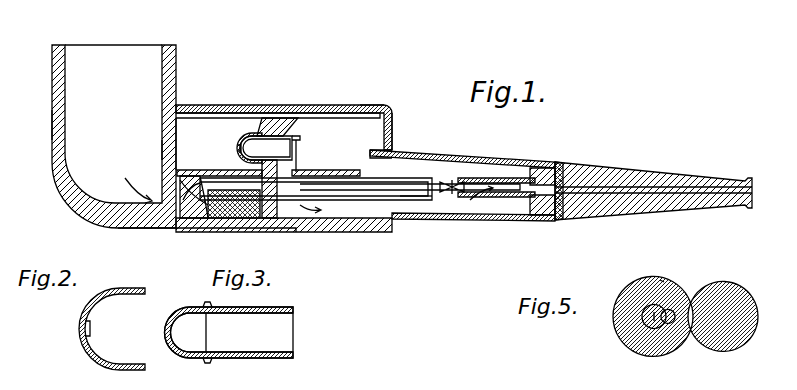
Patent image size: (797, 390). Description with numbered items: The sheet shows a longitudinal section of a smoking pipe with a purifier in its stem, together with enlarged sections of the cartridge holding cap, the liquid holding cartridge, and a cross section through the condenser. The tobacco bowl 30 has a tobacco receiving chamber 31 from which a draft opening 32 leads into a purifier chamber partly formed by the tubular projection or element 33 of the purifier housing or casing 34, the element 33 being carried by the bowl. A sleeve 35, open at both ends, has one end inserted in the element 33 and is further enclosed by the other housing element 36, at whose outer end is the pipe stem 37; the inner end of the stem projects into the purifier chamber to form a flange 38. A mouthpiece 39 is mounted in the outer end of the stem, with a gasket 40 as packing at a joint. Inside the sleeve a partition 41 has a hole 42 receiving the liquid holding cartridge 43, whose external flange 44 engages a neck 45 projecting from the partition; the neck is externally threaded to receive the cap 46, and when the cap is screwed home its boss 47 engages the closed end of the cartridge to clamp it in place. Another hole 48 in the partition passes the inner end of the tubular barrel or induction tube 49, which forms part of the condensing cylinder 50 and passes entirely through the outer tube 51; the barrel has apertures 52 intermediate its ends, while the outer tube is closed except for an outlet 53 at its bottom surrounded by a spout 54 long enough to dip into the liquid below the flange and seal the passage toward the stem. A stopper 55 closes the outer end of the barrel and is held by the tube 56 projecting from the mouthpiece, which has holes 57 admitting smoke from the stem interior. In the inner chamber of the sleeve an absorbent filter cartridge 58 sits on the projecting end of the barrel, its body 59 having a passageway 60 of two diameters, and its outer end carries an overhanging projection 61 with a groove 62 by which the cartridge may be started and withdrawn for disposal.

In FIG. 1, the tobacco bowl 30 is at (52, 68).
In FIG. 1, the tobacco receiving chamber 31 is at (58, 120).
In FIG. 1, the draft opening 32 is at (152, 228).
In FIG. 1, the tubular projection or element 33 is at (228, 105).
In FIG. 1, the purifier housing or casing 34 is at (290, 107).
In FIG. 1, the sleeve 35 is at (370, 105).
In FIG. 1, the housing element 36 is at (392, 108).
In FIG. 1, the pipe stem 37 is at (464, 158).
In FIG. 1, the flange 38 is at (398, 136).
In FIG. 1, the mouthpiece 39 is at (662, 180).
In FIG. 1, the gasket 40 is at (560, 163).
In FIG. 1, the partition 41 is at (318, 116).
In FIG. 1, the hole 42 is at (300, 136).
In FIG. 1, the liquid holding cartridge 43 is at (292, 150).
In FIG. 3, the liquid holding cartridge 43 is at (293, 333).
In FIG. 3, the external flange 44 is at (205, 303).
In FIG. 1, the neck 45 is at (278, 118).
In FIG. 1, the cap 46 is at (250, 133).
In FIG. 2, the cap 46 is at (90, 352).
In FIG. 1, the boss 47 is at (238, 158).
In FIG. 2, the boss 47 is at (85, 328).
In FIG. 1, the hole 48 is at (275, 218).
In FIG. 1, the tubular barrel or induction tube 49 is at (446, 196).
In FIG. 5, the tubular barrel or induction tube 49 is at (667, 322).
In FIG. 1, the condensing cylinder 50 is at (349, 172).
In FIG. 5, the condensing cylinder 50 is at (692, 297).
In FIG. 1, the outer tube 51 is at (420, 200).
In FIG. 5, the outer tube 51 is at (662, 280).
In FIG. 1, the apertures 52 is at (362, 170).
In FIG. 5, the apertures 52 is at (655, 308).
In FIG. 1, the outlet 53 is at (326, 213).
In FIG. 1, the spout 54 is at (306, 220).
In FIG. 1, the stopper 55 is at (452, 182).
In FIG. 1, the tube 56 is at (520, 190).
In FIG. 1, the holes 57 is at (478, 190).
In FIG. 1, the absorbent filter cartridge 58 is at (200, 218).
In FIG. 1, the body 59 is at (228, 218).
In FIG. 1, the passageway 60 is at (214, 182).
In FIG. 1, the overhanging projection 61 is at (163, 149).
In FIG. 1, the groove 62 is at (197, 170).